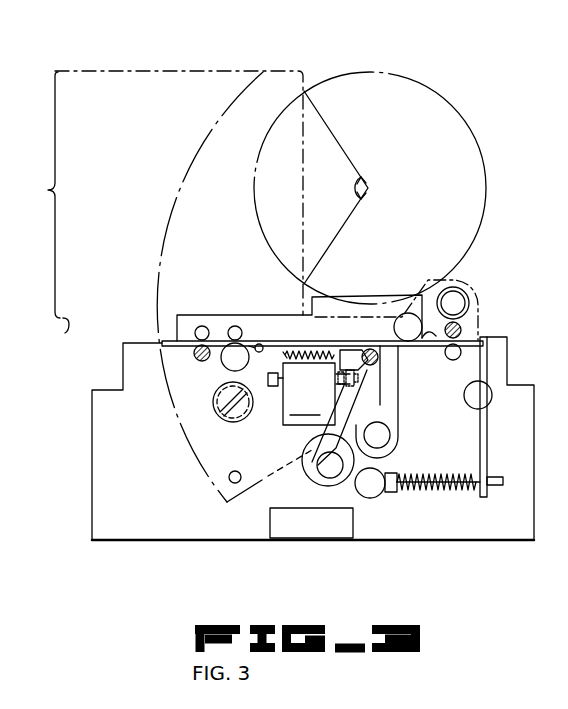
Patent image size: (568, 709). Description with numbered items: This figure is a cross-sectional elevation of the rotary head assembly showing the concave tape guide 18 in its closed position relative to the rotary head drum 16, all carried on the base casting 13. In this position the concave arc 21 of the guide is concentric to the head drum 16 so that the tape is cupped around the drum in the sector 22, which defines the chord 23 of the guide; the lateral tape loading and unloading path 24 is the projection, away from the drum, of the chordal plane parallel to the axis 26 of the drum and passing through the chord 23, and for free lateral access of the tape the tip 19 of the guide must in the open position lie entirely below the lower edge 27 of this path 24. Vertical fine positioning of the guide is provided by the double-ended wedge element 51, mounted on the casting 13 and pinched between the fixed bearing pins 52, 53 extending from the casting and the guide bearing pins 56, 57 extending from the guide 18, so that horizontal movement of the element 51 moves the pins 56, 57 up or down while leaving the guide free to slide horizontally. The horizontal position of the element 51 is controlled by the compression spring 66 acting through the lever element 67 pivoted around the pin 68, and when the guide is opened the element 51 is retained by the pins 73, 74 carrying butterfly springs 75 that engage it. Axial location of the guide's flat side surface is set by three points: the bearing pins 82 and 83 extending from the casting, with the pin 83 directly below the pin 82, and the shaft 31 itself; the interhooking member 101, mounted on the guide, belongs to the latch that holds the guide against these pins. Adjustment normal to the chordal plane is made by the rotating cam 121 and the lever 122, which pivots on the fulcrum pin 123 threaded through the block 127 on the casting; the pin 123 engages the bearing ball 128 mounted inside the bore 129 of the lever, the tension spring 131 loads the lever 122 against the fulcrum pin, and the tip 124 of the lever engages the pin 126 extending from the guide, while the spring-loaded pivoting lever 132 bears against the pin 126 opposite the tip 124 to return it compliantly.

The base casting 13 is at (92, 489).
The rotary head drum 16 is at (443, 98).
The concave tape guide 18 is at (191, 160).
The tip of the guide 19 is at (286, 71).
The concave arc 21 is at (268, 143).
The sector 22 is at (355, 188).
The chord of the guide 23 is at (303, 183).
The lateral tape loading and unloading path 24 is at (39, 195).
The axis of the head drum 26 is at (372, 188).
The lower edge of the loading path 27 is at (67, 337).
The shaft 31 is at (478, 286).
The double-ended wedge element 51 is at (290, 340).
The fixed bearing pin 52 is at (202, 326).
The fixed bearing pin 53 is at (453, 361).
The guide bearing pin 56 is at (193, 354).
The guide bearing pin 57 is at (461, 327).
The compression spring 66 is at (441, 492).
The lever element 67 is at (488, 433).
The pin 68 is at (492, 396).
The pin 73 is at (412, 315).
The pin 74 is at (222, 363).
The butterfly springs 75 is at (265, 338).
The bearing pin 82 is at (235, 326).
The bearing pin 83 is at (228, 480).
The interhooking member 101 is at (230, 412).
The rotating cam 121 is at (337, 475).
The lever 122 is at (313, 437).
The fulcrum pin 123 is at (270, 389).
The tip of the lever 124 is at (350, 350).
The pin 126 is at (372, 349).
The block 127 is at (307, 407).
The bearing ball 128 is at (345, 389).
The bore 129 is at (345, 380).
The tension spring 131 is at (298, 352).
The pivoting lever 132 is at (390, 436).